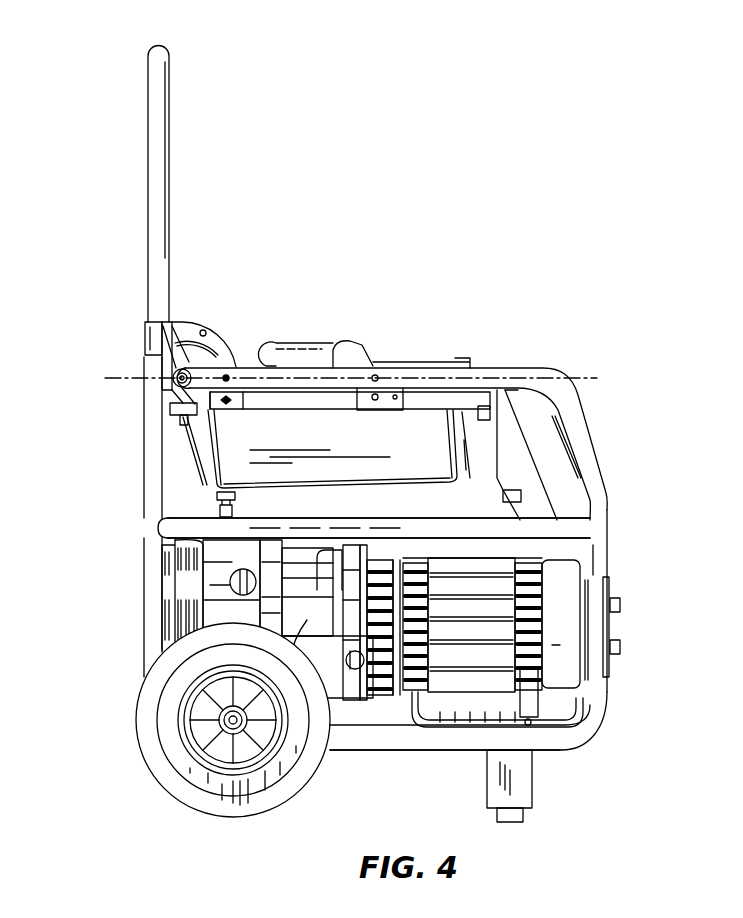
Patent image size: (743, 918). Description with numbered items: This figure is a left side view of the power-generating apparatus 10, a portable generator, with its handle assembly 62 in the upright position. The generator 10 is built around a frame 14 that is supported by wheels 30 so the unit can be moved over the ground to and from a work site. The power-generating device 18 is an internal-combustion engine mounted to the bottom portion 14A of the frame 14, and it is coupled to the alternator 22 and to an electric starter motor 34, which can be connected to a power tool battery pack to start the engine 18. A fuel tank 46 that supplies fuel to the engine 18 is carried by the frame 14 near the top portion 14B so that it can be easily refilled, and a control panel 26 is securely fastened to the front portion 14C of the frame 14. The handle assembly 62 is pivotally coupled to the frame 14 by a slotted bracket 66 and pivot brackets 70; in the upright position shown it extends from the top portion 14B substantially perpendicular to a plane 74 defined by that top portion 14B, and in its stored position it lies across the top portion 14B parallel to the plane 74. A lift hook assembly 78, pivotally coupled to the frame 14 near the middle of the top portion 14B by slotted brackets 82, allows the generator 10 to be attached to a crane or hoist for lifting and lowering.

The power-generating apparatus 10 is at (474, 196).
The frame 14 is at (152, 508).
The bottom portion of the frame 14A is at (385, 738).
The top portion of the frame 14B is at (506, 372).
The front portion of the frame 14C is at (604, 557).
The power-generating device 18 is at (170, 627).
The alternator 22 is at (475, 675).
The control panel 26 is at (555, 463).
The wheels 30 is at (175, 768).
The electric starter motor 34 is at (290, 660).
The fuel tank 46 is at (203, 450).
The handle assembly 62 is at (152, 107).
The slotted bracket 66 is at (190, 325).
The pivot brackets 70 is at (152, 338).
The plane 74 is at (565, 383).
The lift hook assembly 78 is at (273, 350).
The slotted brackets 82 is at (353, 352).